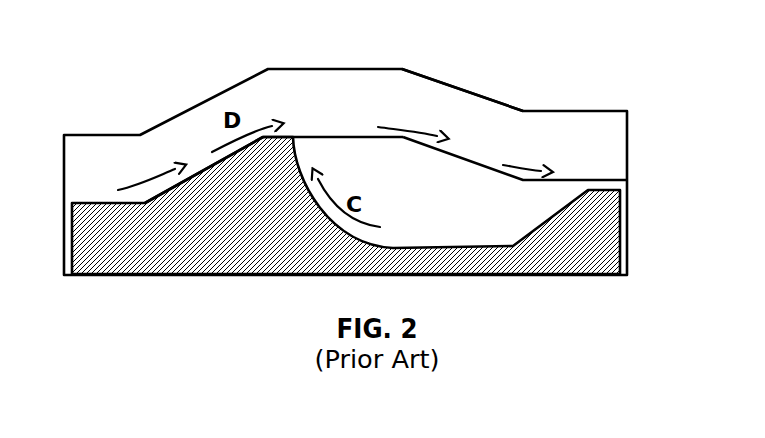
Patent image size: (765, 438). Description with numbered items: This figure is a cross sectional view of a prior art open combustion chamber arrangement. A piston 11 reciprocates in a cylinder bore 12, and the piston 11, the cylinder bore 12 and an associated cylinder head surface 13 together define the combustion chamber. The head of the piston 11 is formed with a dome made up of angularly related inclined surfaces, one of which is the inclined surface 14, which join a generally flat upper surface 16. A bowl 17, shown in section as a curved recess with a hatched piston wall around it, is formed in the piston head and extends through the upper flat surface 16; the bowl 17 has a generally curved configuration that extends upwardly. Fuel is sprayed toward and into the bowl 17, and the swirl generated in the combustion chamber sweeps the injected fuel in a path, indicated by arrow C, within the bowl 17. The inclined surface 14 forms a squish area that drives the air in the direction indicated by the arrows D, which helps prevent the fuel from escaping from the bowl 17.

The piston 11 is at (112, 220).
The cylinder bore 12 is at (623, 146).
The cylinder head surface 13 is at (441, 85).
The inclined surface 14 is at (213, 162).
The upper flat surface 16 is at (365, 137).
The bowl 17 is at (433, 222).